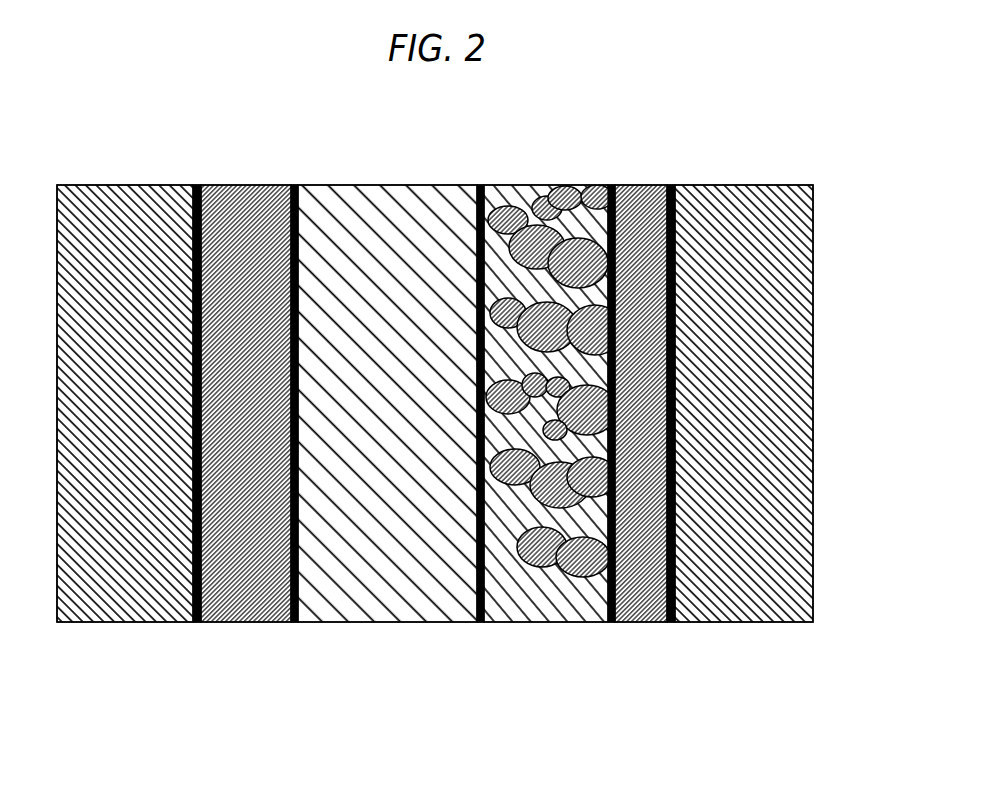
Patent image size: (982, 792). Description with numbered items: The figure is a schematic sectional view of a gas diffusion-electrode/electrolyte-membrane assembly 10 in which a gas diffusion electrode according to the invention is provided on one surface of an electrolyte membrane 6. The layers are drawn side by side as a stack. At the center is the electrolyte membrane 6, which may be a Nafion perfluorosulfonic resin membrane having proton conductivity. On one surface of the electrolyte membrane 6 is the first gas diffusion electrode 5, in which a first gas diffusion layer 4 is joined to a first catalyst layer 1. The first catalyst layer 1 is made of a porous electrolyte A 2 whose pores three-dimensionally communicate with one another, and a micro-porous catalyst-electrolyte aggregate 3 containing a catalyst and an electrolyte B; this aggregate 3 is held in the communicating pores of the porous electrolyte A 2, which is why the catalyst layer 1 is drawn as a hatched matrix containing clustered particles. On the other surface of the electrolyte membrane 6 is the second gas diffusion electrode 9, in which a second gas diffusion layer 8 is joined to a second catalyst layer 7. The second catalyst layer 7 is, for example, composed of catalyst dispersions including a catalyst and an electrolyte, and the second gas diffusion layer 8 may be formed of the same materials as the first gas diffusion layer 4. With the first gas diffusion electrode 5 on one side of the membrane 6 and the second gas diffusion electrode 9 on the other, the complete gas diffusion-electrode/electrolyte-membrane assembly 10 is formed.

The first catalyst layer 1 is at (672, 439).
The porous electrolyte A 2 is at (598, 293).
The micro-porous catalyst-electrolyte aggregate 3 is at (598, 416).
The first gas diffusion layer 4 is at (744, 439).
The first gas diffusion electrode 5 is at (671, 405).
The electrolyte membrane 6 is at (477, 643).
The second catalyst layer 7 is at (202, 643).
The second gas diffusion layer 8 is at (195, 643).
The second gas diffusion electrode 9 is at (177, 406).
The gas diffusion-electrode/electrolyte-membrane assembly 10 is at (458, 442).